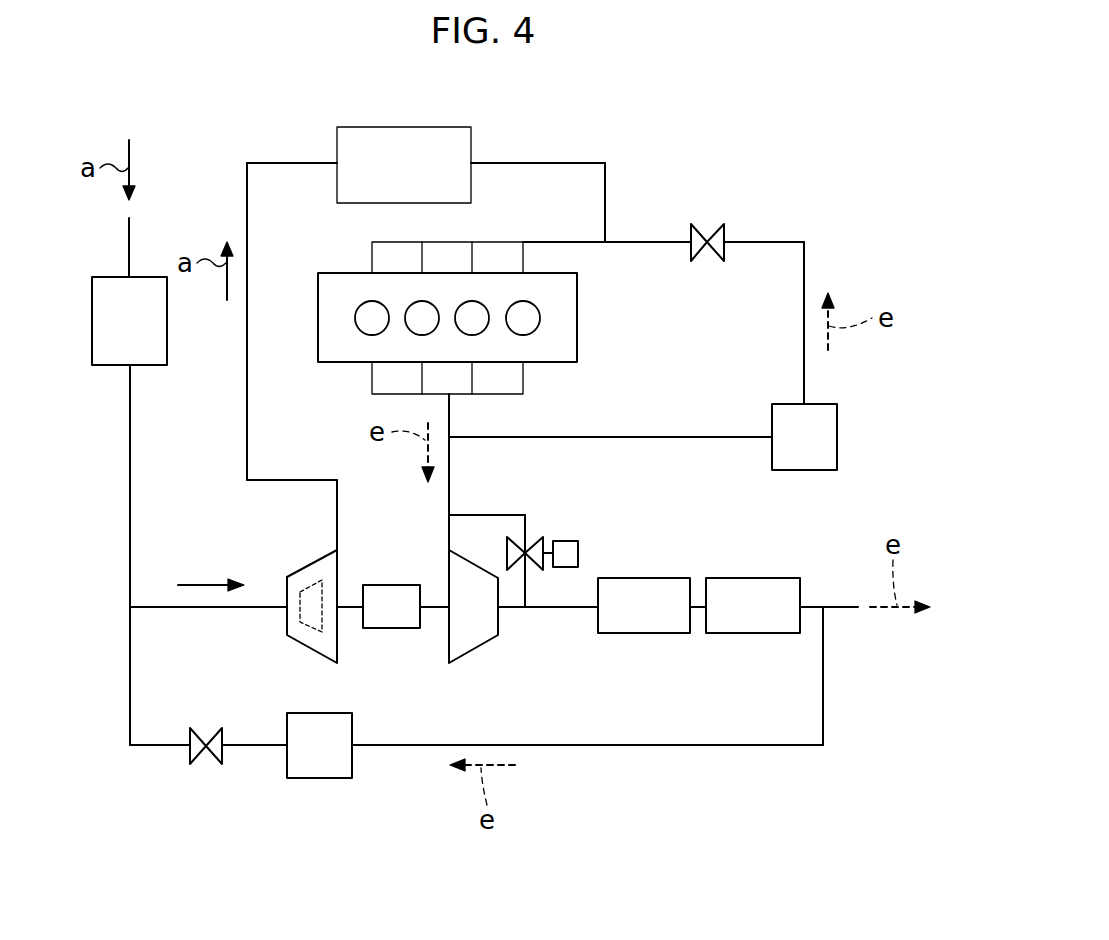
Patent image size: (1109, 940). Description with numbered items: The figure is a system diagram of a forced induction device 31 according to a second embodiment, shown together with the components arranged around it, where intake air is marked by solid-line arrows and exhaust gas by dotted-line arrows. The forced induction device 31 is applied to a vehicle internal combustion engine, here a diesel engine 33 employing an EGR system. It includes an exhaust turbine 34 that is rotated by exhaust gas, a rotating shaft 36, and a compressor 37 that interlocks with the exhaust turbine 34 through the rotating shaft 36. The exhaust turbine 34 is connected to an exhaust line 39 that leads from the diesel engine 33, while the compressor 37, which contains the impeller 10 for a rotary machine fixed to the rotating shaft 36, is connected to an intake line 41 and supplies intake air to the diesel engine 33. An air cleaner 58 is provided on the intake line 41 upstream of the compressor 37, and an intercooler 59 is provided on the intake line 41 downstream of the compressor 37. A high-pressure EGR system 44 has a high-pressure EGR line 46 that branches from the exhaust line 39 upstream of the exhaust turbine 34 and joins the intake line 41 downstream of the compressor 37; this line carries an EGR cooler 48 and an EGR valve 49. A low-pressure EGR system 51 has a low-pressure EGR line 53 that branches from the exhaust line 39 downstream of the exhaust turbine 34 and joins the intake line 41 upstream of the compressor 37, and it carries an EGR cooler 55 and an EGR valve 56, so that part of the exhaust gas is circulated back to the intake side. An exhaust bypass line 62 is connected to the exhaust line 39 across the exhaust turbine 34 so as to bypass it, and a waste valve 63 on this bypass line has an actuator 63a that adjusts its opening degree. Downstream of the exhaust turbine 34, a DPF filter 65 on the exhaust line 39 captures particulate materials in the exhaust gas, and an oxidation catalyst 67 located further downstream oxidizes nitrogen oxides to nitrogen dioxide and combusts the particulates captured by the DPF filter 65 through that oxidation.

The impeller for a rotary machine 10 is at (313, 578).
The forced induction device 31 is at (387, 578).
The diesel engine 33 is at (577, 316).
The exhaust turbine 34 is at (478, 645).
The rotating shaft 36 is at (350, 608).
The compressor 37 is at (310, 646).
The exhaust line 39 is at (449, 457).
The intake line 41 is at (163, 605).
The high-pressure EGR system 44 is at (857, 300).
The high-pressure EGR line 46 is at (804, 378).
The EGR cooler 48 is at (837, 435).
The EGR valve 49 is at (697, 230).
The low-pressure EGR system 51 is at (608, 765).
The low-pressure EGR line 53 is at (823, 695).
The EGR cooler 55 is at (322, 780).
The EGR valve 56 is at (212, 762).
The air cleaner 58 is at (105, 367).
The intercooler 59 is at (400, 127).
The exhaust bypass line 62 is at (490, 515).
The waste valve 63 is at (537, 535).
The actuator 63a is at (578, 545).
The DPF filter 65 is at (643, 635).
The oxidation catalyst 67 is at (752, 635).